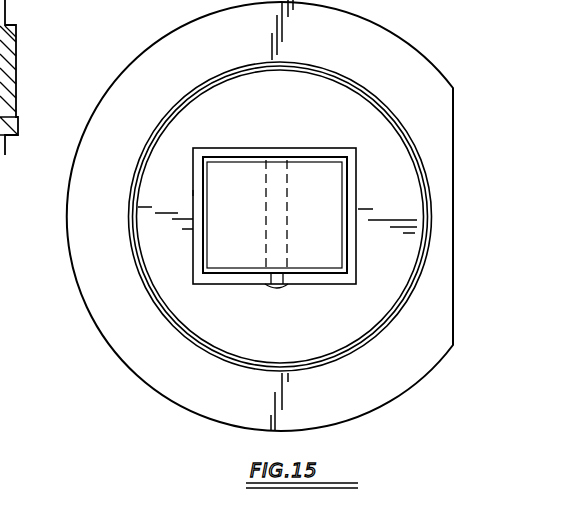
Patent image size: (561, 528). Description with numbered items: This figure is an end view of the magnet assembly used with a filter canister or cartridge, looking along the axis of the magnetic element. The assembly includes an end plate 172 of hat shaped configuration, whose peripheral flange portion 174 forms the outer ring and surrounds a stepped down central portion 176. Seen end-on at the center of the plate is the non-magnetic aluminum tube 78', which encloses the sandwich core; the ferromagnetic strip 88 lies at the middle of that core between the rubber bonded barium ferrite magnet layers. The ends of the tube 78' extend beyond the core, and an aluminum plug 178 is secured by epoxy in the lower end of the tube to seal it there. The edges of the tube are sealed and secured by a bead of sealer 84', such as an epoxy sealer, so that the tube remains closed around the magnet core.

The end plate 172 is at (111, 345).
The peripheral flange portion 174 is at (158, 376).
The stepped down central portion 176 is at (290, 117).
The aluminum plug 178 is at (250, 248).
The ferromagnetic strip 88 is at (277, 192).
The non-magnetic aluminum tube 78' is at (171, 186).
The bead of sealer 84' is at (293, 296).